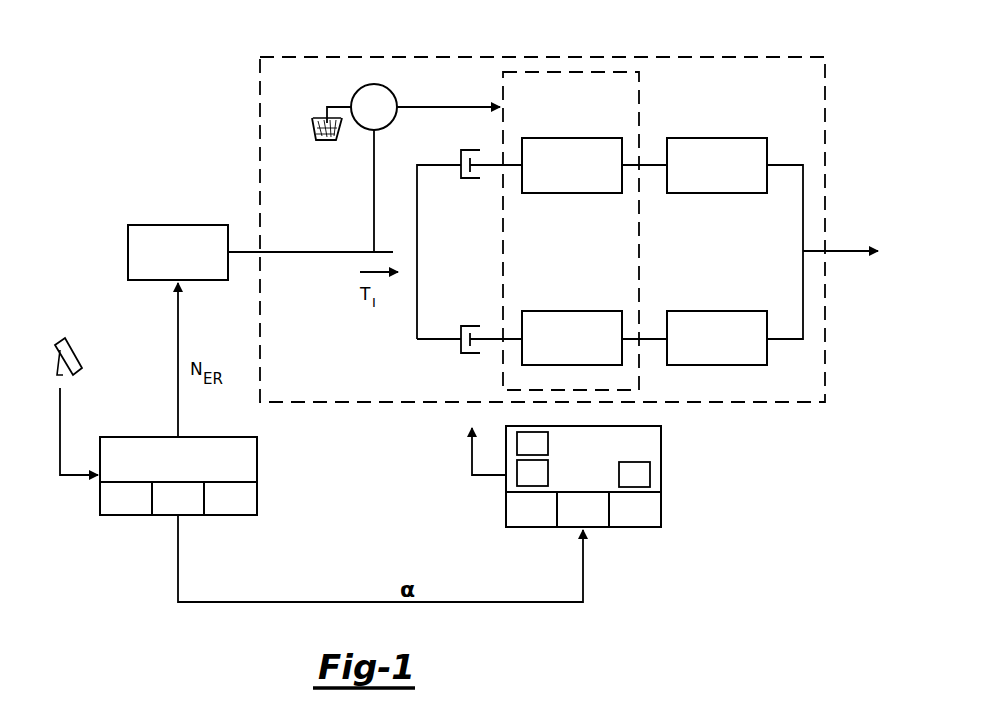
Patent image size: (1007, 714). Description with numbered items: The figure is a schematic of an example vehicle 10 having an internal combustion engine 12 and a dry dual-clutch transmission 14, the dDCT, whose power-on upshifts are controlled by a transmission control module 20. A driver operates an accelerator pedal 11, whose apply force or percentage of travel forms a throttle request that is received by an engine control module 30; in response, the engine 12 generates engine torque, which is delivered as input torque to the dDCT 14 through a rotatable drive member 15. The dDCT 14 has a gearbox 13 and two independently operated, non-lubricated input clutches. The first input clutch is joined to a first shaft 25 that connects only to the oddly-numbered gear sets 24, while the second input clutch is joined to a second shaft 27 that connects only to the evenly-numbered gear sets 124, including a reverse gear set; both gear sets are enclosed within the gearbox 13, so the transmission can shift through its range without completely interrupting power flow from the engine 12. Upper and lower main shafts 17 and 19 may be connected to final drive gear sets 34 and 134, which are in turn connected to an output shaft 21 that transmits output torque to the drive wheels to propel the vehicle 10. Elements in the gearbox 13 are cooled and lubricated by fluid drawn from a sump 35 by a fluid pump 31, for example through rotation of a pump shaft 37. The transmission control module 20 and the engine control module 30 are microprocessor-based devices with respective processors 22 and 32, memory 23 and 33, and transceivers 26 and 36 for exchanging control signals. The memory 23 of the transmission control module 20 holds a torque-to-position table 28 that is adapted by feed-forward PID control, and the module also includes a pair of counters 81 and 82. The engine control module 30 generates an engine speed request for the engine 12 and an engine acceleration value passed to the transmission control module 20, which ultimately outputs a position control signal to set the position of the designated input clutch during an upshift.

The vehicle 10 is at (766, 32).
The accelerator pedal 11 is at (59, 325).
The internal combustion engine 12 is at (178, 252).
The gearbox 13 is at (580, 72).
The dry dual-clutch transmission 14 is at (750, 403).
The rotatable drive member 15 is at (393, 252).
The upper main shaft 17 is at (438, 165).
The lower main shaft 19 is at (438, 339).
The transmission control module 20 is at (552, 503).
The output shaft 21 is at (845, 251).
The processor 22 is at (532, 514).
The memory 23 is at (584, 514).
The oddly-numbered gear sets 24 is at (570, 138).
The first shaft 25 is at (488, 165).
The transceiver 26 is at (636, 514).
The second shaft 27 is at (488, 339).
The torque-to-position table 28 is at (634, 474).
The engine control module 30 is at (178, 452).
The fluid pump 31 is at (425, 104).
The processor 32 is at (127, 502).
The memory 33 is at (179, 502).
The final drive gear set 34 is at (716, 138).
The sump 35 is at (312, 128).
The transceiver 36 is at (232, 502).
The pump shaft 37 is at (374, 180).
The counter 81 is at (532, 473).
The counter 82 is at (532, 443).
The evenly-numbered gear sets 124 is at (570, 311).
The final drive gear set 134 is at (716, 311).